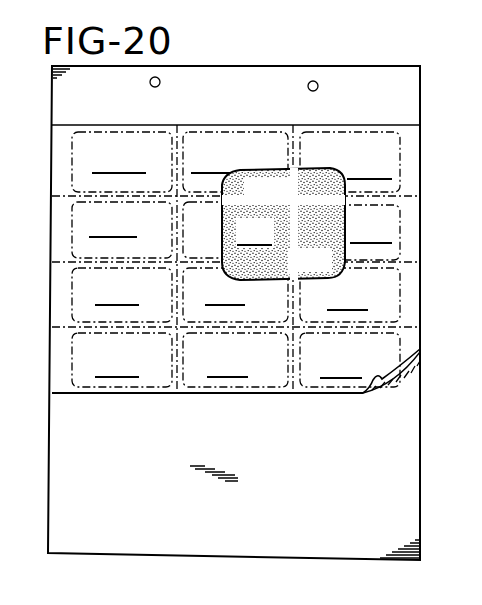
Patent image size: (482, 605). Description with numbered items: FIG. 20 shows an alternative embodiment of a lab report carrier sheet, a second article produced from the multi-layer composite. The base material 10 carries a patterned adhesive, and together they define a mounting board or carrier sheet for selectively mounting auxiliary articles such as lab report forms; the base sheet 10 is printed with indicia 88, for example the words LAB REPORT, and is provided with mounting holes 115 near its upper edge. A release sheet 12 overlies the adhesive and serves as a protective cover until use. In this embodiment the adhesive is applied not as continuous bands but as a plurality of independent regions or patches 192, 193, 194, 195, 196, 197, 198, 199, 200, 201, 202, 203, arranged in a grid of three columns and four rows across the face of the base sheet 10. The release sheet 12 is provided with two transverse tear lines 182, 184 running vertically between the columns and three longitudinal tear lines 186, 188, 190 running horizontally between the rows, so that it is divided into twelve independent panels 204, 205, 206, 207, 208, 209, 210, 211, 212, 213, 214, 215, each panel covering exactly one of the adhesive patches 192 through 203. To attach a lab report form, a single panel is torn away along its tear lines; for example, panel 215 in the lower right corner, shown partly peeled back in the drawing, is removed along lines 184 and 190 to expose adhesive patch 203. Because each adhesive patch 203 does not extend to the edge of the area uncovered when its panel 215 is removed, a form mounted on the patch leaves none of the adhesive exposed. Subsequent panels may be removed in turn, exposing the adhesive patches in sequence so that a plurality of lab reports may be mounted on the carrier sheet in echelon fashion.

The base material 10 is at (376, 76).
The release sheet 12 is at (326, 121).
The indicia 88 is at (224, 113).
The mounting holes 115 is at (159, 78).
The transverse tear line 182 is at (180, 386).
The transverse tear line 184 is at (302, 387).
The longitudinal tear line 186 is at (403, 200).
The longitudinal tear line 188 is at (405, 268).
The longitudinal tear line 190 is at (402, 333).
The adhesive patch 192 is at (148, 130).
The adhesive patch 193 is at (210, 135).
The adhesive patch 194 is at (352, 140).
The adhesive patch 195 is at (77, 238).
The adhesive patch 196 is at (261, 232).
The adhesive patch 197 is at (396, 220).
The adhesive patch 198 is at (80, 290).
The adhesive patch 199 is at (273, 278).
The adhesive patch 200 is at (388, 308).
The adhesive patch 201 is at (156, 386).
The adhesive patch 202 is at (273, 384).
The adhesive patch 203 is at (342, 397).
The release sheet panel 204 is at (118, 162).
The release sheet panel 205 is at (216, 162).
The release sheet panel 206 is at (372, 168).
The release sheet panel 207 is at (114, 226).
The release sheet panel 208 is at (214, 218).
The release sheet panel 209 is at (375, 232).
The release sheet panel 210 is at (120, 294).
The release sheet panel 211 is at (230, 294).
The release sheet panel 212 is at (352, 299).
The release sheet panel 213 is at (120, 365).
The release sheet panel 214 is at (232, 365).
The release sheet panel 215 is at (345, 366).